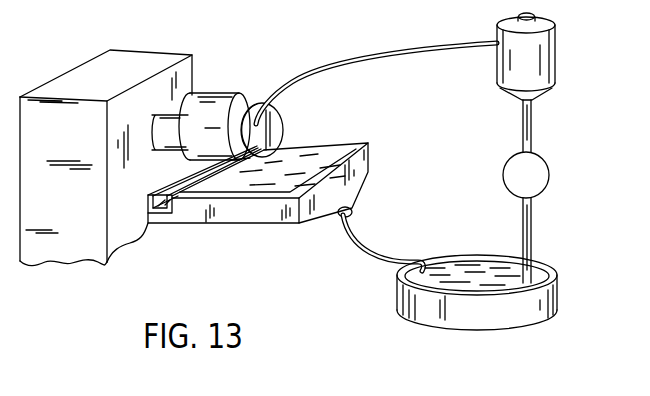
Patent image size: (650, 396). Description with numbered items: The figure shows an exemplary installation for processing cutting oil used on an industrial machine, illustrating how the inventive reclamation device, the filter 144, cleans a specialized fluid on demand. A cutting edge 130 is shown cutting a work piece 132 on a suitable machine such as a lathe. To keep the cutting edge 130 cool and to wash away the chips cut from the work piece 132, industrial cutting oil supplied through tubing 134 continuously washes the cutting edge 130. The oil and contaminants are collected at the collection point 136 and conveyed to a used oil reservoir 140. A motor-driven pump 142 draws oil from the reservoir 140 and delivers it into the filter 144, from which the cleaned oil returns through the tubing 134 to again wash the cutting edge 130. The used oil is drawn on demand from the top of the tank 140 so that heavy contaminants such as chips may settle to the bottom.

The cutting edge 130 is at (284, 126).
The work piece 132 is at (217, 98).
The tubing 134 is at (300, 62).
The oil collection point 136 is at (257, 212).
The used oil reservoir 140 is at (500, 318).
The motor-driven pump 142 is at (540, 183).
The filter 144 is at (537, 60).